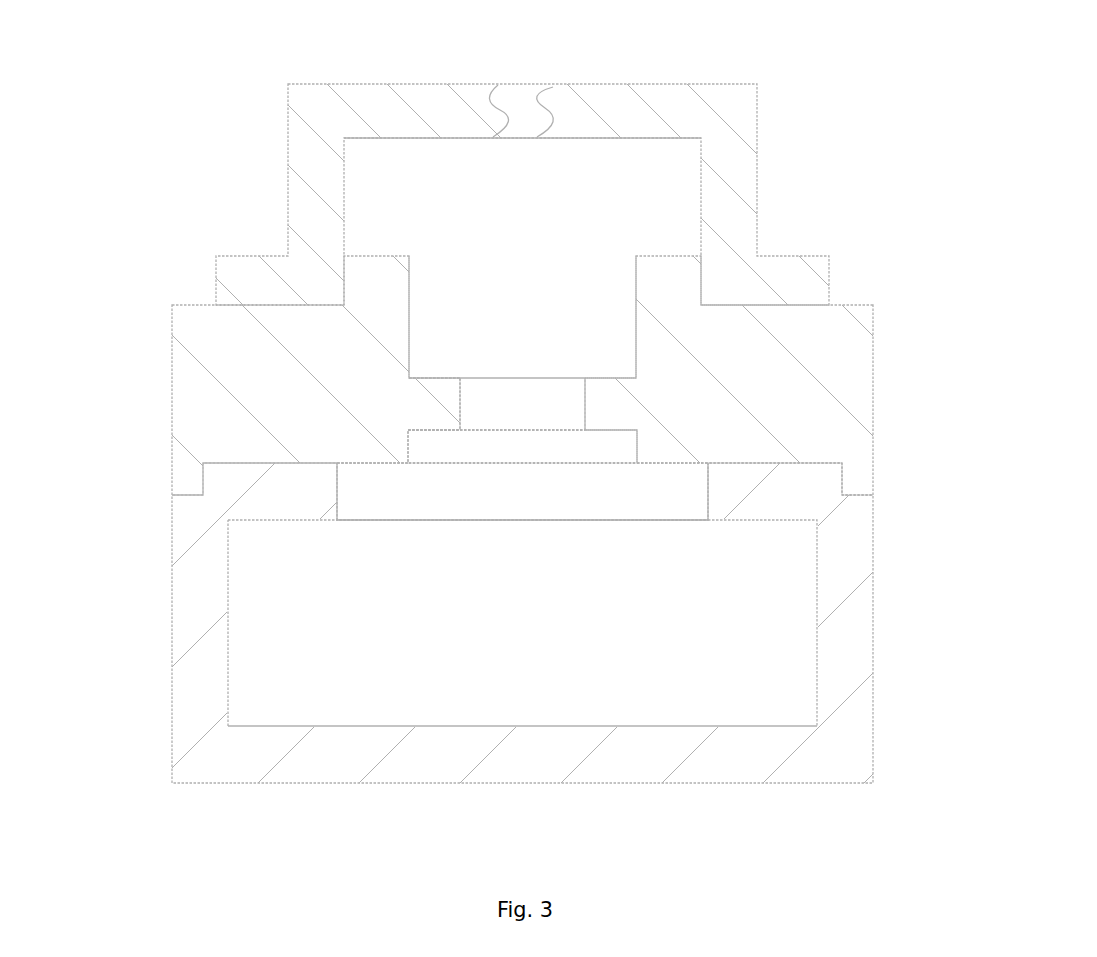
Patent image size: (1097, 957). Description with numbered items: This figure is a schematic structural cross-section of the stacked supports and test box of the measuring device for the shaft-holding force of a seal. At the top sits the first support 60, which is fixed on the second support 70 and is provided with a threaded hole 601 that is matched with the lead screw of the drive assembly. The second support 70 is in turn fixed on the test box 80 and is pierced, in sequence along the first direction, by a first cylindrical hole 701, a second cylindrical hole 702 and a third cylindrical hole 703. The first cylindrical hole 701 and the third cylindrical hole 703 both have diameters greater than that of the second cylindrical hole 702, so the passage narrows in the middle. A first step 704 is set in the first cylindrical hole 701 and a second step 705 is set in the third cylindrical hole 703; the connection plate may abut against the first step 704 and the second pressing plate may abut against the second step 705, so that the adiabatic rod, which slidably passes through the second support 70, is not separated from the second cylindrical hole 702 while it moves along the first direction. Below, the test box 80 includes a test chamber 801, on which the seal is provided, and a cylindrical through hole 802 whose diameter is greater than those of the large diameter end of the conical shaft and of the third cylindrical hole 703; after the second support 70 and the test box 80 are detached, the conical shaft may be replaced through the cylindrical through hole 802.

The first support 60 is at (313, 160).
The threaded hole 601 is at (522, 122).
The second support 70 is at (187, 390).
The first cylindrical hole 701 is at (550, 302).
The second cylindrical hole 702 is at (503, 405).
The third cylindrical hole 703 is at (527, 452).
The first step 704 is at (445, 380).
The second step 705 is at (440, 430).
The test box 80 is at (845, 655).
The test chamber 801 is at (610, 685).
The cylindrical through hole 802 is at (527, 497).